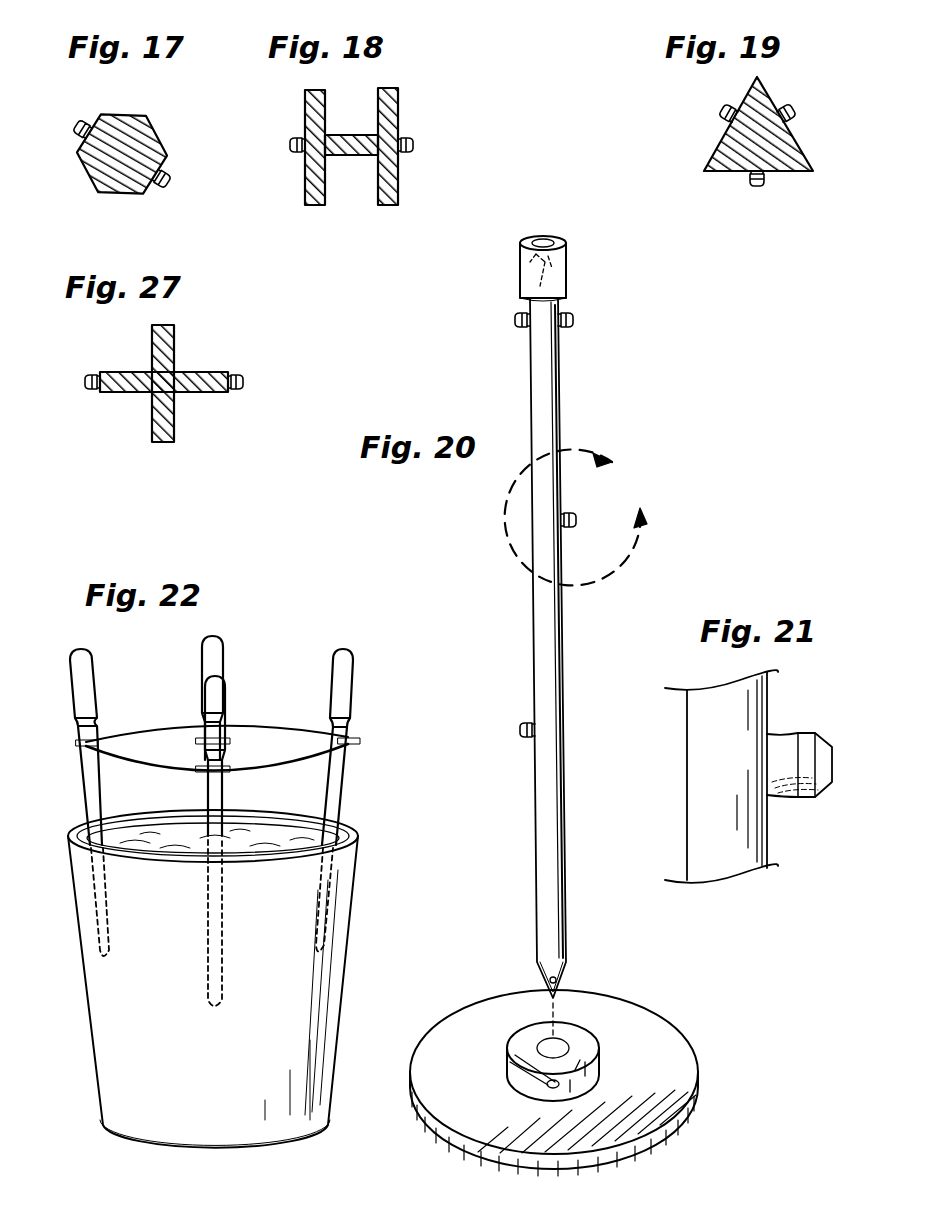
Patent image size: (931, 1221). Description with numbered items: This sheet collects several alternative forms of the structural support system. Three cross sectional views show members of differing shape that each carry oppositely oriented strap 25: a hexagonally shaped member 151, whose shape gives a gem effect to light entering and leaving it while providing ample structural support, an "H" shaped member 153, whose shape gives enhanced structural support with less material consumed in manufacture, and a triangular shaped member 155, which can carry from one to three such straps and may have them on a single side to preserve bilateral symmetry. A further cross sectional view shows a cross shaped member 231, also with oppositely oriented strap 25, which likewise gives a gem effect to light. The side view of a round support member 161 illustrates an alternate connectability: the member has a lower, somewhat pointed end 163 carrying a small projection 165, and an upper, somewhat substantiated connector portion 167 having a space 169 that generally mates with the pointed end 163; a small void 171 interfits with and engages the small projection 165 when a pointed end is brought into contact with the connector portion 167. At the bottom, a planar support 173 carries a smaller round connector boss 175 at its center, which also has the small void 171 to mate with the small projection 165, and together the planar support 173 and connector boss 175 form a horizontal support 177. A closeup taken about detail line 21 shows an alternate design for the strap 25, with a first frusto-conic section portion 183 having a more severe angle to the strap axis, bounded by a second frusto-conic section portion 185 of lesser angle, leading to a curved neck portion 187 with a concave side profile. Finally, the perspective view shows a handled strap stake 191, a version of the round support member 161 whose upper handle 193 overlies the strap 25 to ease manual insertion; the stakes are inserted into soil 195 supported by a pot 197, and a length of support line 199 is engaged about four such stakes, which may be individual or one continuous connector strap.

In FIG. 17, the hexagonally shaped member 151 is at (128, 113).
In FIG. 18, the "H" shaped member 153 is at (397, 97).
In FIG. 19, the triangular shaped member 155 is at (808, 148).
In FIG. 27, the cross shaped member 231 is at (174, 334).
In FIG. 17, the strap 25 is at (73, 126).
In FIG. 18, the strap 25 is at (290, 148).
In FIG. 19, the strap 25 is at (712, 111).
In FIG. 27, the strap 25 is at (245, 378).
In FIG. 20, the strap 25 is at (516, 322).
In FIG. 21, the strap 25 is at (840, 770).
In FIG. 22, the strap 25 is at (356, 741).
In FIG. 20, the round support member 161 is at (556, 640).
In FIG. 21, the round support member 161 is at (772, 824).
In FIG. 20, the pointed end 163 is at (565, 972).
In FIG. 20, the small projection 165 is at (548, 981).
In FIG. 20, the connector portion 167 is at (566, 278).
In FIG. 20, the space 169 is at (543, 238).
In FIG. 20, the small void 171 is at (530, 273).
In FIG. 20, the planar support 173 is at (692, 1050).
In FIG. 20, the connector boss 175 is at (586, 1040).
In FIG. 20, the horizontal support 177 is at (425, 1144).
In FIG. 20, the detail line 21 is at (590, 517).
In FIG. 21, the first frusto-conic section portion 183 is at (826, 786).
In FIG. 21, the second frusto-conic section portion 185 is at (812, 736).
In FIG. 21, the curved neck portion 187 is at (786, 737).
In FIG. 22, the handled strap stake 191 is at (356, 790).
In FIG. 22, the upper handle 193 is at (223, 650).
In FIG. 22, the soil 195 is at (270, 836).
In FIG. 22, the pot 197 is at (318, 978).
In FIG. 22, the support line 199 is at (136, 738).